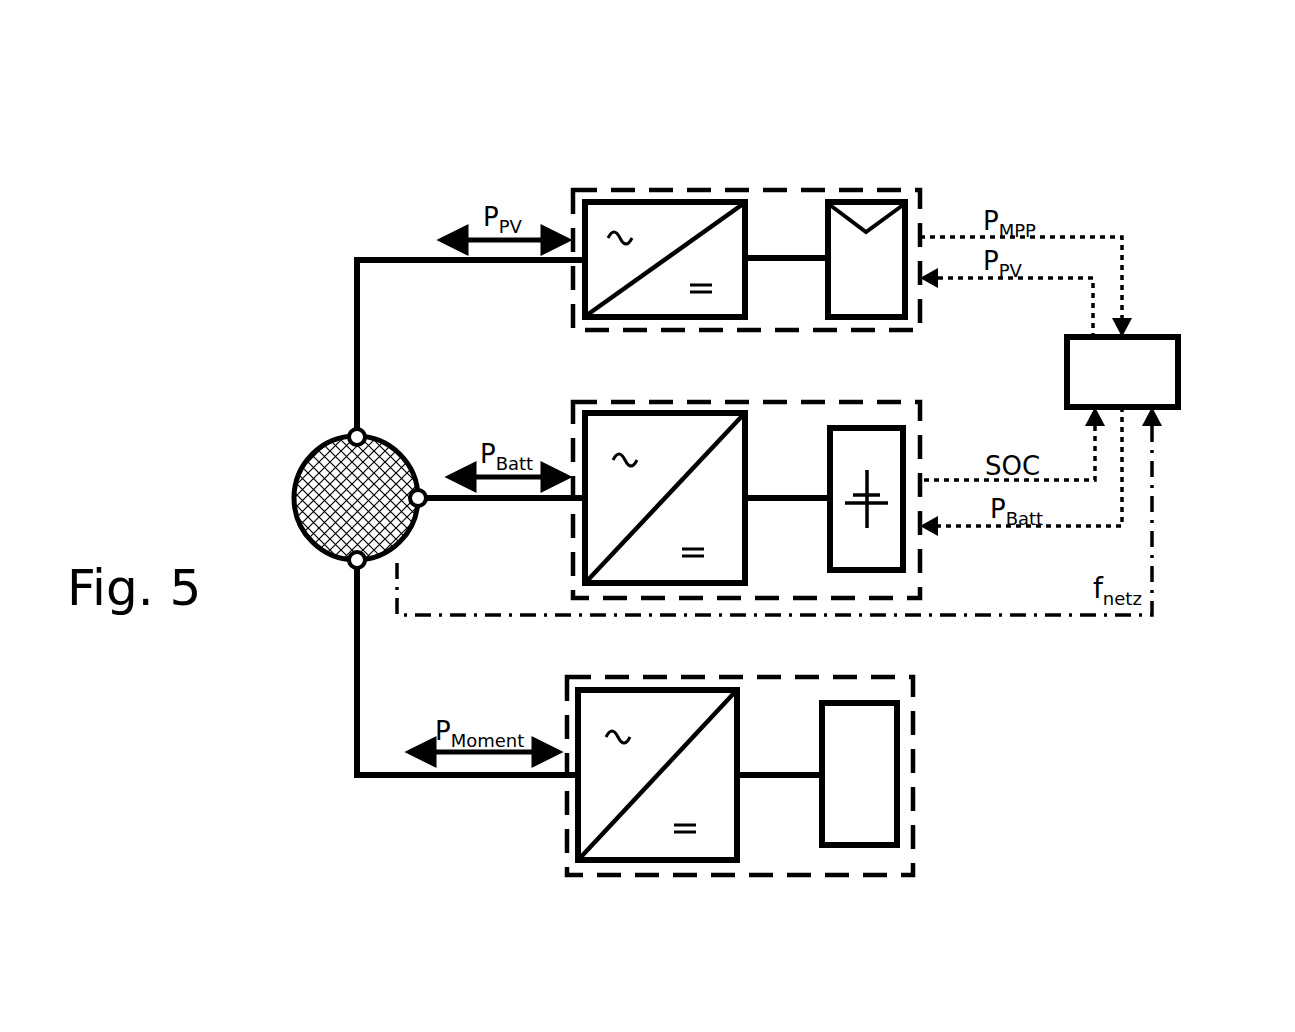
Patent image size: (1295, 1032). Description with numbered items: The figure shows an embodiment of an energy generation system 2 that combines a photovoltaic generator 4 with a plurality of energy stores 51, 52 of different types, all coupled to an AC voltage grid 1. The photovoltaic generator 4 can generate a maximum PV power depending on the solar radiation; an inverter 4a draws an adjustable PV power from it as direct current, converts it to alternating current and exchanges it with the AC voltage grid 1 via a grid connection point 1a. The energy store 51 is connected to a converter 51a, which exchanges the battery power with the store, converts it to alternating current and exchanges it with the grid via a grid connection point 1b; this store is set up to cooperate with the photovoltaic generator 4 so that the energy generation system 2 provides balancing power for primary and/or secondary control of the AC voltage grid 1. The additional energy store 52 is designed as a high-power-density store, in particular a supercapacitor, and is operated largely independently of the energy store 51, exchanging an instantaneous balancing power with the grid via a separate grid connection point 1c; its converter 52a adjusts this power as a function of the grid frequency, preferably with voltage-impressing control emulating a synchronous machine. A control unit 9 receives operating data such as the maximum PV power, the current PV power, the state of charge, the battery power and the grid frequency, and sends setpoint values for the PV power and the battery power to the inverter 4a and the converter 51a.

The AC voltage grid 1 is at (316, 449).
The grid connection point 1a is at (365, 430).
The grid connection point 1b is at (424, 505).
The grid connection point 1c is at (350, 567).
The energy generation system 2 is at (1032, 163).
The photovoltaic generator 4 is at (905, 218).
The inverter 4a is at (745, 208).
The energy store 51 is at (905, 440).
The converter 51a is at (745, 440).
The energy store 52 is at (897, 715).
The converter 52a is at (737, 715).
The control unit 9 is at (1178, 370).